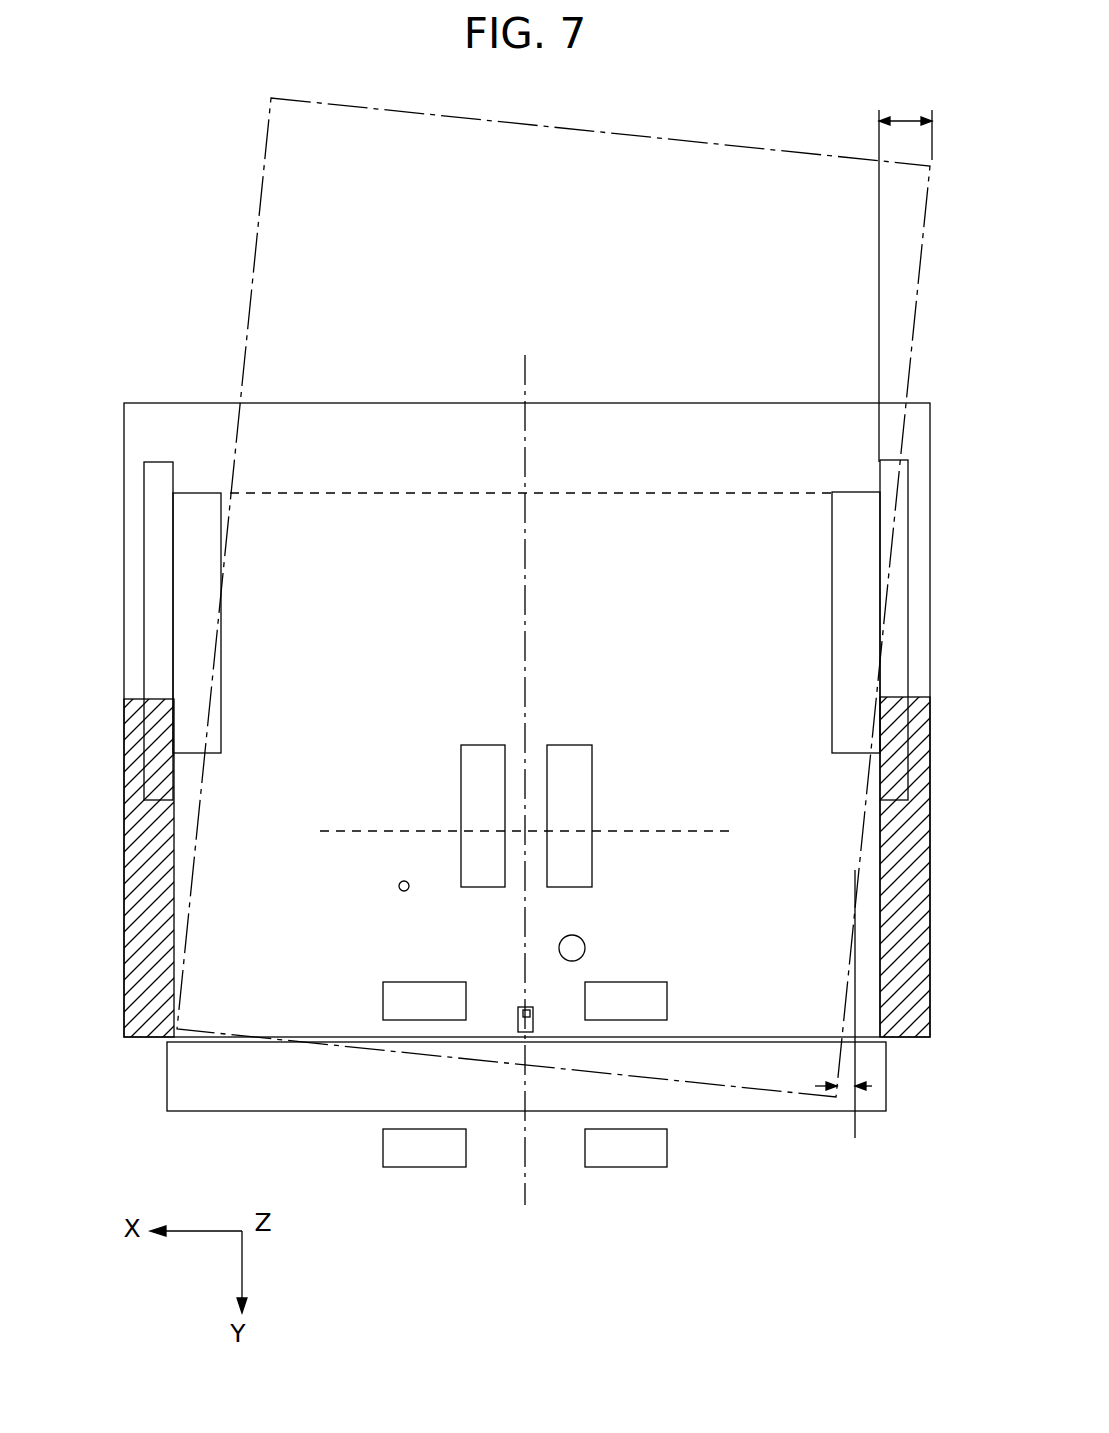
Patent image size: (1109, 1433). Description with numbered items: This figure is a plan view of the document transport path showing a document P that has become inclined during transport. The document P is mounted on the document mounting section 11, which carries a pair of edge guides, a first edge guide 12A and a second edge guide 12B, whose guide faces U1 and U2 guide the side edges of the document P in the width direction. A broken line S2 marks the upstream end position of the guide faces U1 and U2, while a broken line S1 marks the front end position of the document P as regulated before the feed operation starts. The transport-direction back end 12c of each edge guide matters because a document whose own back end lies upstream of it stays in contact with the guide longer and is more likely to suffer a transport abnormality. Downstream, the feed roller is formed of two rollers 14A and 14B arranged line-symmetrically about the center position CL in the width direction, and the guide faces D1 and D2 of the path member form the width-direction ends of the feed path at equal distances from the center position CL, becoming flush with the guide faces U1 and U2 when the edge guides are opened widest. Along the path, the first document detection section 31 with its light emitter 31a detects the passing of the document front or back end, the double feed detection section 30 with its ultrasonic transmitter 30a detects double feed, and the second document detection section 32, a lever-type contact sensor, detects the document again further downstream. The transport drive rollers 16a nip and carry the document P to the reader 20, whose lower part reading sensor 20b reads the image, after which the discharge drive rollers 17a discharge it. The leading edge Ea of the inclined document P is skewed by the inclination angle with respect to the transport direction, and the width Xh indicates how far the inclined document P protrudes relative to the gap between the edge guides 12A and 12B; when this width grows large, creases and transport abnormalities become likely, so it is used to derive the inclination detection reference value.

The document P is at (257, 239).
The width Xh is at (905, 272).
The document mounting section 11 is at (349, 403).
The first edge guide 12A is at (487, 558).
The second edge guide 12B is at (903, 500).
The transport-direction back end of the edge guide 12c is at (160, 462).
The center position CL is at (526, 762).
The upstream end position S2 is at (684, 492).
The front end position S1 is at (691, 831).
The guide face U1 is at (175, 524).
The guide face U2 is at (879, 515).
The feed roller 14A is at (481, 752).
The feed roller 14B is at (576, 752).
The guide face D1 is at (175, 913).
The guide face D2 is at (880, 870).
The first document detection section 31 is at (350, 867).
The light emitter 31a is at (398, 885).
The double feed detection section 30 is at (643, 926).
The ultrasonic transmitter 30a is at (586, 946).
The second document detection section 32 is at (526, 1010).
The transport drive roller 16a is at (383, 994).
The discharge drive roller 17a is at (410, 1168).
The reader 20 is at (526, 1114).
The lower part reading sensor 20b is at (244, 1083).
The leading edge of sheet Ea is at (680, 1095).